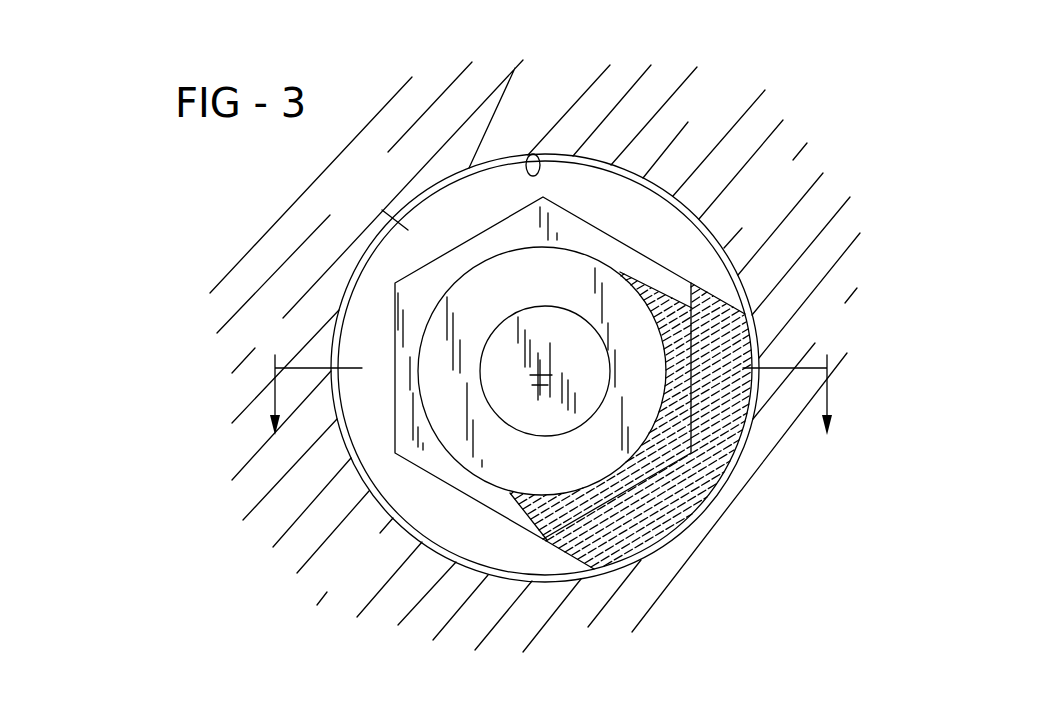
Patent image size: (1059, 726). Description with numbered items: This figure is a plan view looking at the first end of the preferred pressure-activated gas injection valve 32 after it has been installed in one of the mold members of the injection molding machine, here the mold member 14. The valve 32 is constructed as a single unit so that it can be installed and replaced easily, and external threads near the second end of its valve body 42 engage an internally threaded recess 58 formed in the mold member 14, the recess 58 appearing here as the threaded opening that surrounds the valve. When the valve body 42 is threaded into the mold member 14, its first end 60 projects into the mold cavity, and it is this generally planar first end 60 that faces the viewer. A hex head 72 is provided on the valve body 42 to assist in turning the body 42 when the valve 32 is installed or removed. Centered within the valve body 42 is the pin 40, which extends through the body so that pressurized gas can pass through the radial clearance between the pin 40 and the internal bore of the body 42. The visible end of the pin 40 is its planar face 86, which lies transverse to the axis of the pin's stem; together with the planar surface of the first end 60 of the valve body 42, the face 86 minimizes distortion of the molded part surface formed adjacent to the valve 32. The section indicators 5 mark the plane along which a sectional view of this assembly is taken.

The second mold member 14 is at (728, 110).
The gas injection valve 32 is at (397, 527).
The valve body 42 is at (392, 203).
The internally threaded recess 58 is at (529, 158).
The hex head 72 is at (612, 250).
The first end of the valve body 60 is at (570, 481).
The pin 40 is at (544, 323).
The planar face 86 is at (601, 379).
The section line 5- 5 is at (556, 374).